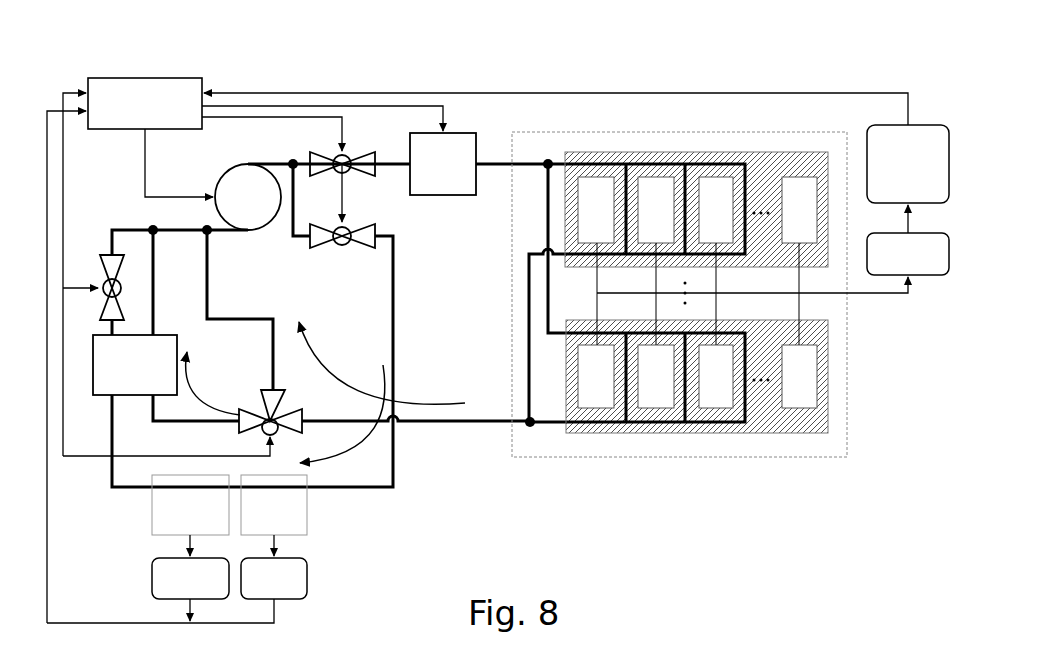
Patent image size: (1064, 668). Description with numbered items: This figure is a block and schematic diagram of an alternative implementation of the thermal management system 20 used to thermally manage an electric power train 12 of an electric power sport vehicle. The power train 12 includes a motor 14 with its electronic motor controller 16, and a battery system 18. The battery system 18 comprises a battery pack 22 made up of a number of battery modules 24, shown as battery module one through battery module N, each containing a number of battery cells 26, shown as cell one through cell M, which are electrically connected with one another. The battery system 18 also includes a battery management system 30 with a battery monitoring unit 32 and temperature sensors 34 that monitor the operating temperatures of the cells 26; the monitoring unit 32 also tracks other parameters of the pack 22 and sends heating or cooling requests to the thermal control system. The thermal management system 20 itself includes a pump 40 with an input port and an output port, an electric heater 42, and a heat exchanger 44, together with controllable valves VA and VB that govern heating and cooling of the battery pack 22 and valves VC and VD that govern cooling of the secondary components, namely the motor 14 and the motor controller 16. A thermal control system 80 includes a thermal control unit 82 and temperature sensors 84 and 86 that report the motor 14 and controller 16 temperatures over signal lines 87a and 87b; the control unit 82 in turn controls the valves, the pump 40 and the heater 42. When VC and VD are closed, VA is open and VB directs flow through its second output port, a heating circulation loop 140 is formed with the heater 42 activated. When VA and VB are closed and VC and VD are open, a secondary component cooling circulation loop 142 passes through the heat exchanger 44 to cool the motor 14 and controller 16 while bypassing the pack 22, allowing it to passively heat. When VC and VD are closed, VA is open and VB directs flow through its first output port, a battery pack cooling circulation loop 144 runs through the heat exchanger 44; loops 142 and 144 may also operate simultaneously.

The electric power train 12 is at (494, 515).
The motor 14 is at (308, 511).
The electronic motor controller 16 is at (150, 511).
The battery system 18 is at (796, 512).
The thermal management system 20 is at (483, 38).
The battery pack 22 is at (680, 458).
The battery module 24 is at (797, 152).
The battery cell 26 is at (818, 210).
The battery management system 30 is at (928, 113).
The battery monitoring unit 32 is at (925, 204).
The temperature sensors 34 is at (925, 276).
The pump 40 is at (262, 232).
The electric heater 42 is at (428, 196).
The heat exchanger 44 is at (100, 396).
The thermal control system 80 is at (195, 56).
The thermal control unit 82 is at (173, 78).
The motor temperature sensor 84 is at (308, 588).
The controller temperature sensor 86 is at (150, 588).
The signal line 87a is at (280, 614).
The signal line 87b is at (196, 612).
The heating circulation loop 140 is at (312, 355).
The secondary component cooling circulation loop 142 is at (352, 455).
The battery pack cooling circulation loop 144 is at (183, 394).